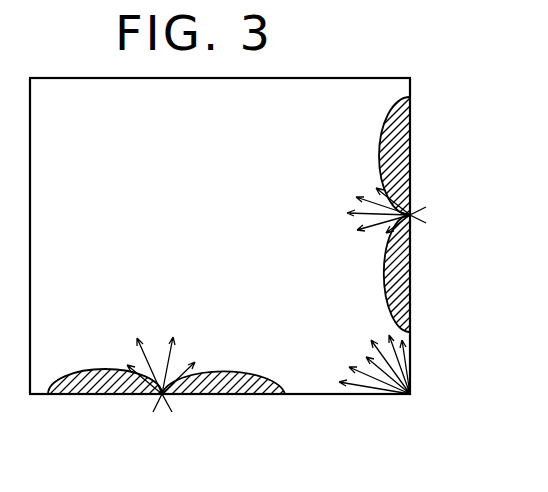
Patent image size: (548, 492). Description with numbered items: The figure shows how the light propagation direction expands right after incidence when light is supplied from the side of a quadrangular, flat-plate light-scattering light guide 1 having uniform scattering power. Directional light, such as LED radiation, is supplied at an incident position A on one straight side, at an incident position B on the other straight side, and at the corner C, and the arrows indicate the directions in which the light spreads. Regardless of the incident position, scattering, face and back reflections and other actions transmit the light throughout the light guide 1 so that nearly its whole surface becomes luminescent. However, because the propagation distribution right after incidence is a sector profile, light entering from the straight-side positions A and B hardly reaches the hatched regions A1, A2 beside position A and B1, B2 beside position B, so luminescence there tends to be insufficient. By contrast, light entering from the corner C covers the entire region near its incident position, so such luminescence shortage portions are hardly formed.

The light-scattering light guide 1 is at (145, 168).
The incident position on a straight side A is at (162, 394).
The luminescence shortage region A1 is at (90, 377).
The luminescence shortage region A2 is at (233, 380).
The incident position on a straight side B is at (415, 215).
The luminescence shortage region B1 is at (391, 147).
The luminescence shortage region B2 is at (401, 290).
The corner incident position C is at (388, 382).